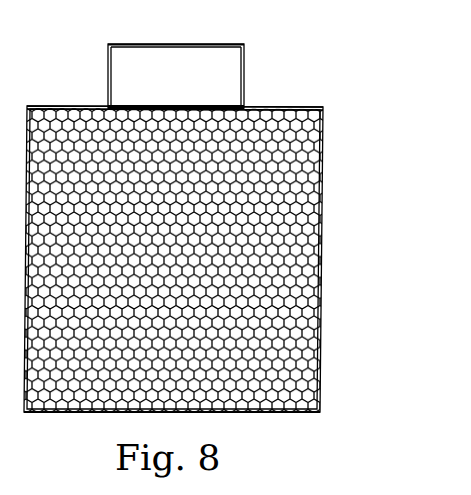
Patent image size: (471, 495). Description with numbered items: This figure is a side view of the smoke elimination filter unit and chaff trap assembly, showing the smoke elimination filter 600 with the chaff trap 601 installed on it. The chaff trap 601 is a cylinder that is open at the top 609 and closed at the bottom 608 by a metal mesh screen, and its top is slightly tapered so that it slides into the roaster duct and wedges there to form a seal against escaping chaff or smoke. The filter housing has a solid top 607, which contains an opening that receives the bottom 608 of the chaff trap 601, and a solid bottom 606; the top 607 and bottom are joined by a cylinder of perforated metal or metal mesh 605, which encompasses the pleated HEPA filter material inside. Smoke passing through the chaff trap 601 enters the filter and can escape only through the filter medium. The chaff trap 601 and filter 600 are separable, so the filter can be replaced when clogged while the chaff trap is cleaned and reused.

The smoke elimination filter unit 600 is at (210, 260).
The chaff trap cup 601 is at (239, 61).
The perforated metal or metal mesh cylinder 605 is at (293, 259).
The solid bottom 606 is at (298, 412).
The solid top 607 is at (75, 107).
The bottom of chaff trap 608 is at (235, 107).
The open top of chaff trap 609 is at (168, 44).